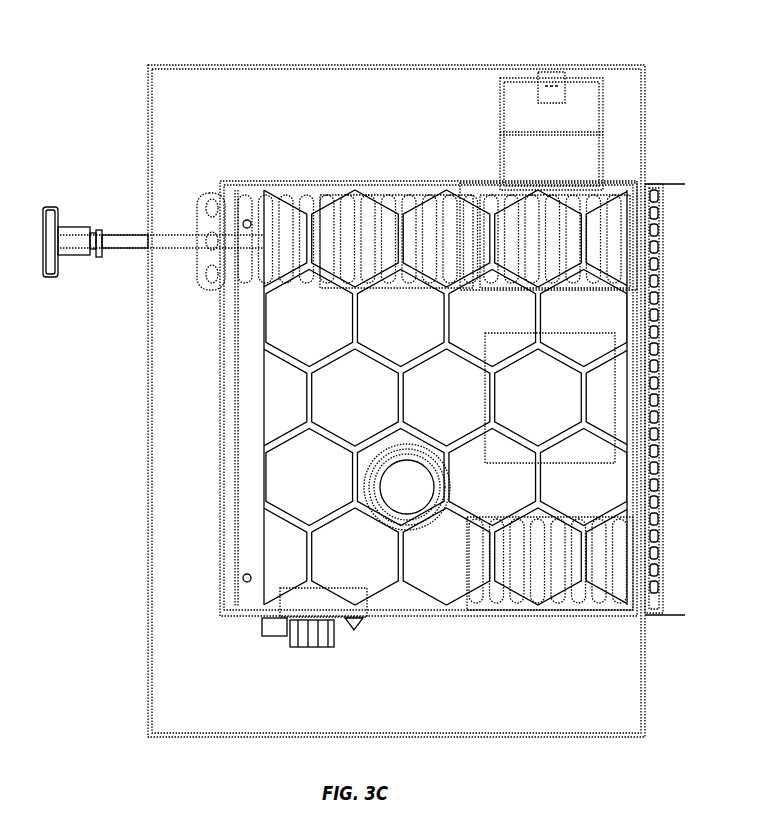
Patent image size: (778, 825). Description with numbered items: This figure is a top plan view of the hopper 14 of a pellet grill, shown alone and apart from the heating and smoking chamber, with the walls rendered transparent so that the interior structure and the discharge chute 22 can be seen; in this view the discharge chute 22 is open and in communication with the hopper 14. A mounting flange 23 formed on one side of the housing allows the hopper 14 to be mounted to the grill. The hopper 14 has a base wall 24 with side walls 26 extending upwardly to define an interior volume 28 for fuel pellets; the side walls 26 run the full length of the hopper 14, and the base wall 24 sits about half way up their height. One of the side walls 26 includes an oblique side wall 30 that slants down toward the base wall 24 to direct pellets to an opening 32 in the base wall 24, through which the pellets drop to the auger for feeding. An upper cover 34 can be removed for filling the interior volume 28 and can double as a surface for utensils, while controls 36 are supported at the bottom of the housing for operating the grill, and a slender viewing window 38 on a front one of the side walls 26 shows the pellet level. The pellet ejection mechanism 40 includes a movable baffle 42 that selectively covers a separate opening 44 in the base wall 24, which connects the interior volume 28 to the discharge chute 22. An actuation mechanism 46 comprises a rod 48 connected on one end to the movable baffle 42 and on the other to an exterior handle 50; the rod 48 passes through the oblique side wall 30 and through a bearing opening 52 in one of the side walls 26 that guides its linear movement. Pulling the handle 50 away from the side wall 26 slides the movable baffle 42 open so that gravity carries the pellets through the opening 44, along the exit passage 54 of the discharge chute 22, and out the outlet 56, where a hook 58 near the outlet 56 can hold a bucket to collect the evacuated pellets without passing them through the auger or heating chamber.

The hopper 14 is at (118, 456).
The discharge chute 22 is at (603, 160).
The mounting flange 23 is at (670, 184).
The base wall 24 is at (600, 484).
The side walls 26 is at (392, 183).
The interior volume 28 is at (297, 473).
The oblique side wall 30 is at (375, 568).
The opening 32 is at (615, 378).
The upper cover 34 is at (150, 96).
The controls 36 is at (297, 647).
The viewing window 38 is at (525, 617).
The pellet ejection mechanism 40 is at (500, 182).
The movable baffle 42 is at (393, 288).
The opening 44 is at (560, 288).
The actuation mechanism 46 is at (170, 258).
The rod 48 is at (127, 234).
The handle 50 is at (50, 278).
The bearing opening 52 is at (207, 250).
The exit passage 54 is at (574, 150).
The outlet 56 is at (522, 88).
The hook 58 is at (553, 72).